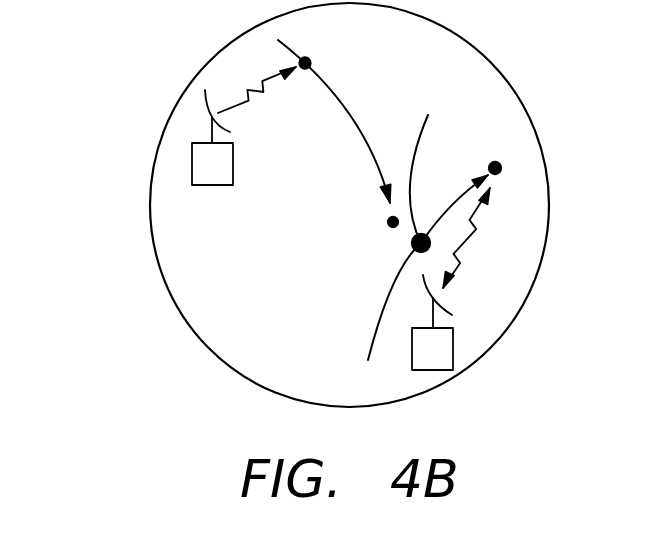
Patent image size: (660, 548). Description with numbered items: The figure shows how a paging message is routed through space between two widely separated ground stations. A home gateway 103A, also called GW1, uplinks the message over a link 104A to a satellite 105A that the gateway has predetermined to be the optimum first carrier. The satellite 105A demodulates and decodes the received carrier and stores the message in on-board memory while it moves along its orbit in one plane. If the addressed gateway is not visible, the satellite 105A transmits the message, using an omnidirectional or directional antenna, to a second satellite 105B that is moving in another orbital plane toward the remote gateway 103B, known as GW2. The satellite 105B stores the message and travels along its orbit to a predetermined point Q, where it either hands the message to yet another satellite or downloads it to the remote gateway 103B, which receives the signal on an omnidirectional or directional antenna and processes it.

The home gateway 103A is at (193, 165).
The link 104A is at (262, 93).
The satellite 105A is at (308, 61).
The satellite 105B is at (419, 224).
The remote gateway 103B is at (453, 345).
The predetermined point Q is at (495, 168).